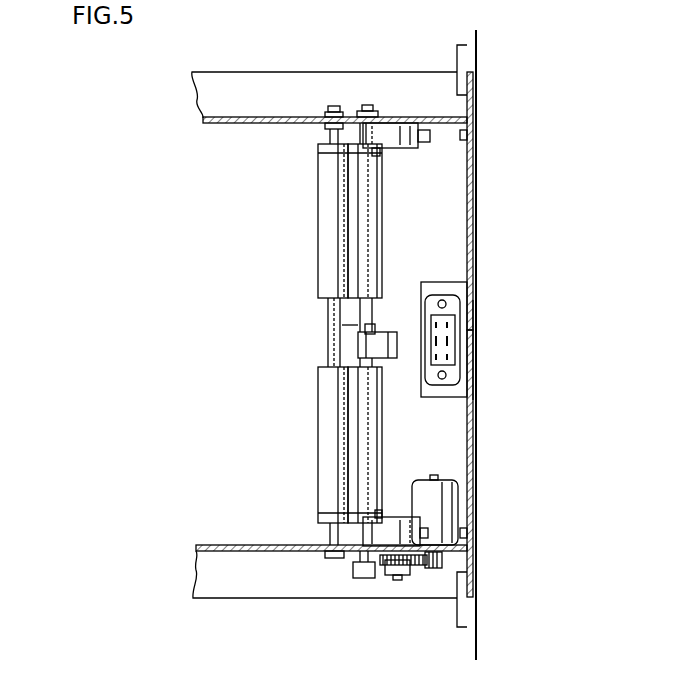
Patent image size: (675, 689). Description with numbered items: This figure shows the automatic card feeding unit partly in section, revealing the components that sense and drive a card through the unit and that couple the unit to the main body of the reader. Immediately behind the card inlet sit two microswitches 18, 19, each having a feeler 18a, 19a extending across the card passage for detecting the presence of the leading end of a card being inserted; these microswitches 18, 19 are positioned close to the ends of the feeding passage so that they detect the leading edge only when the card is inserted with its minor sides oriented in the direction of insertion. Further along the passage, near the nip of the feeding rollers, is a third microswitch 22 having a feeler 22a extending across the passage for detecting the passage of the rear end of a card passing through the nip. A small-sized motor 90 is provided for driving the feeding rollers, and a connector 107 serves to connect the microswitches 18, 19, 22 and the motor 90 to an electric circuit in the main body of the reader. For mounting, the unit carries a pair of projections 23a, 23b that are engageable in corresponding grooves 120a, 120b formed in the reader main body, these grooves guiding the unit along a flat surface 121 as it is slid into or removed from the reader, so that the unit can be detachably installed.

The microswitch 18 is at (415, 148).
The feeler 18a is at (338, 153).
The microswitch 19 is at (394, 517).
The feeler 19a is at (330, 514).
The microswitch 22 is at (386, 338).
The feeler 22a is at (350, 325).
The projection 23a is at (472, 100).
The projection 23b is at (473, 562).
The motor 90 is at (445, 490).
The connector 107 is at (450, 297).
The groove 120a is at (470, 56).
The groove 120b is at (470, 612).
The flat surface 121 is at (474, 336).